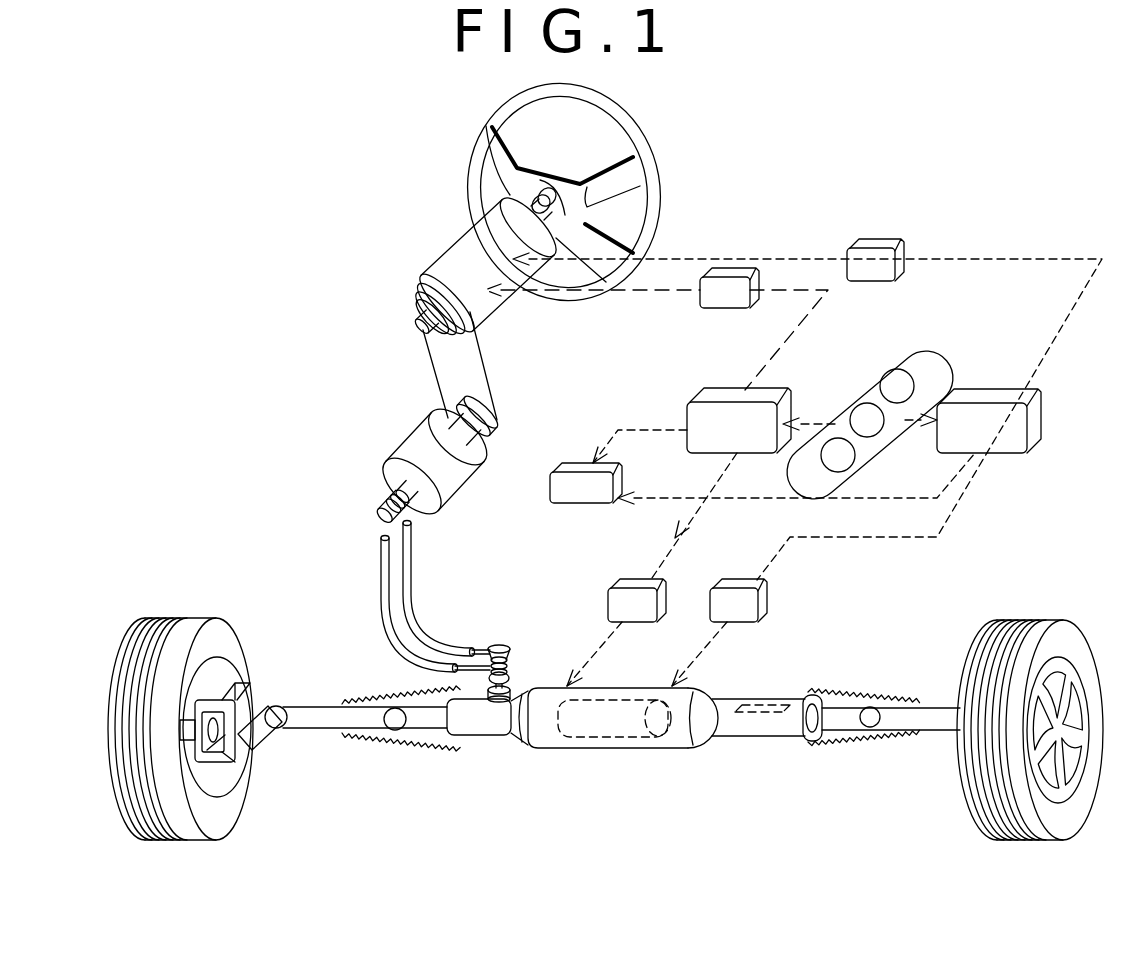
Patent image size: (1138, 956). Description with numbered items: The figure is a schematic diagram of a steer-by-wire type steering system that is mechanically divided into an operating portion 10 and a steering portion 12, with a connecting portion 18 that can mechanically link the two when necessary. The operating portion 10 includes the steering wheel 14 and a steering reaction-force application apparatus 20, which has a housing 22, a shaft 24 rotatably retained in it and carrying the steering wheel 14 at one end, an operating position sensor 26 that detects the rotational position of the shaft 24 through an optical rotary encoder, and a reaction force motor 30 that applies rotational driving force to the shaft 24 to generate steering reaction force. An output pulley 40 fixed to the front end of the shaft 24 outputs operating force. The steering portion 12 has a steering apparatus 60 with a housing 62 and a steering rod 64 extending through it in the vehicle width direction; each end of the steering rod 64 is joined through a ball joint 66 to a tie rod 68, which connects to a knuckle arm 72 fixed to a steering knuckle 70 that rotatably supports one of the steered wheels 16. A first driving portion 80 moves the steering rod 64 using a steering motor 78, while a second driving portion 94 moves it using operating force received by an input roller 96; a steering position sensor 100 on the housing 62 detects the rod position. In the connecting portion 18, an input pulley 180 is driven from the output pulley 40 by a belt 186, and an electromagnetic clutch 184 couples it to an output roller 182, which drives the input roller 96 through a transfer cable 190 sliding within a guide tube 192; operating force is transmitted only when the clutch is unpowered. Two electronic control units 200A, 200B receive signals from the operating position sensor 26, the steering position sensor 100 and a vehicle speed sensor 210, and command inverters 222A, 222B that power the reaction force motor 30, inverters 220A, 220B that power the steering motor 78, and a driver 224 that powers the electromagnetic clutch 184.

The operating portion 10 is at (292, 148).
The steering portion 12 is at (215, 540).
The steering wheel 14 is at (638, 150).
The steered wheels 16 is at (218, 640).
The connecting portion 18 is at (268, 425).
The steering reaction-force application apparatus 20 is at (385, 205).
The housing 22 is at (468, 228).
The shaft 24 is at (548, 188).
The operating position sensor 26 is at (505, 178).
The reaction force motor 30 is at (455, 262).
The output pulley 40 is at (418, 312).
The steering apparatus 60 is at (610, 861).
The housing 62 is at (688, 745).
The steering rod 64 is at (833, 722).
The ball joint 66 is at (392, 730).
The tie rod 68 is at (310, 707).
The steering knuckle 70 is at (215, 775).
The knuckle arm 72 is at (263, 742).
The steering motor 78 is at (572, 735).
The first driving portion 80 is at (616, 778).
The second driving portion 94 is at (508, 724).
The input roller 96 is at (505, 648).
The steering position sensor 100 is at (768, 693).
The input pulley 180 is at (462, 425).
The output roller 182 is at (380, 513).
The electromagnetic clutch 184 is at (420, 445).
The belt 186 is at (430, 367).
The transfer cable 190 is at (415, 518).
The guide tube 192 is at (418, 597).
The electronic control unit 200A is at (790, 404).
The electronic control unit 200B is at (1085, 407).
The vehicle speed sensor 210 is at (905, 364).
The inverter 220A is at (660, 598).
The inverter 220B is at (764, 600).
The inverter 222A is at (727, 313).
The inverter 222B is at (905, 248).
The driver 224 is at (565, 503).